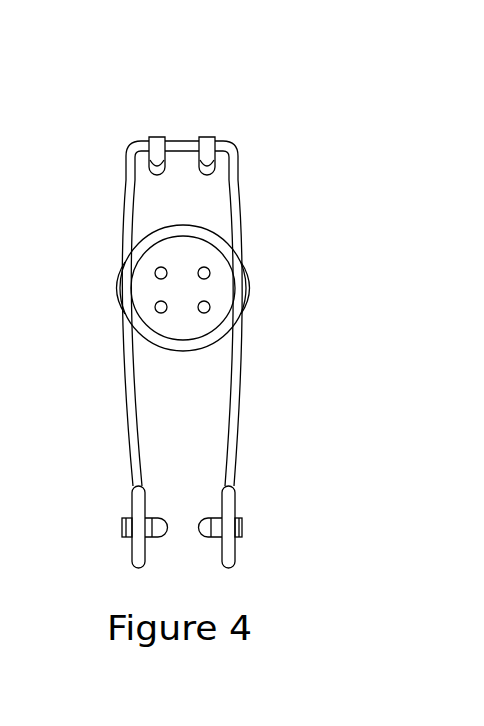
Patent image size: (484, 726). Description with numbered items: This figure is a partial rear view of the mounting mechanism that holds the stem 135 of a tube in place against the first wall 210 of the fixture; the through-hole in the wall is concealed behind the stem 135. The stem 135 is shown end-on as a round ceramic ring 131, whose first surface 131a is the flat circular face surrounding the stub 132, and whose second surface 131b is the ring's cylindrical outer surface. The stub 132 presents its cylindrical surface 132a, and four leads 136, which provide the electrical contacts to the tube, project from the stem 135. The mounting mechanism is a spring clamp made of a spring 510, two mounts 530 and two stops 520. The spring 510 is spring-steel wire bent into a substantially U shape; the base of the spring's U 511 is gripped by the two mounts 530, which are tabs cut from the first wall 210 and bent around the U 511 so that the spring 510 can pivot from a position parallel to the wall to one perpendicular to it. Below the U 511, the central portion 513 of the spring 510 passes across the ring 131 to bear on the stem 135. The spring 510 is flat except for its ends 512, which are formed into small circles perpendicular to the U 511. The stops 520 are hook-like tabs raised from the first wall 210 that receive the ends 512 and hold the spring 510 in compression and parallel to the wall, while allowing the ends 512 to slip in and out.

The first wall 210 is at (97, 161).
The spring's U 511 is at (178, 137).
The mounts 530 is at (208, 150).
The central portion 513 is at (128, 257).
The spring 510 is at (237, 424).
The ends 512 is at (137, 567).
The stops 520 is at (242, 525).
The ring 131 is at (210, 236).
The first surface 131a is at (167, 343).
The second surface 131b is at (248, 282).
The stem 135 is at (110, 286).
The stub 132 is at (221, 311).
The surface 132a is at (141, 320).
The leads 136 is at (159, 315).